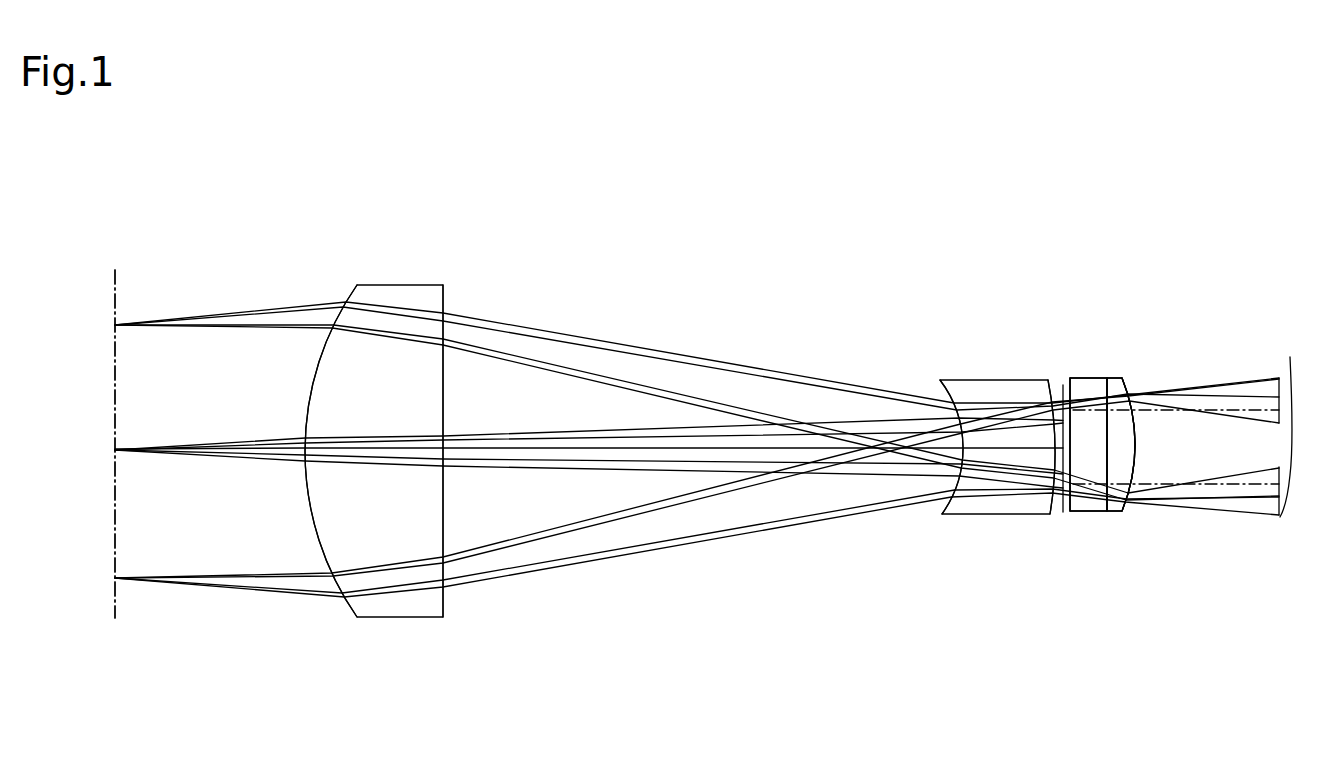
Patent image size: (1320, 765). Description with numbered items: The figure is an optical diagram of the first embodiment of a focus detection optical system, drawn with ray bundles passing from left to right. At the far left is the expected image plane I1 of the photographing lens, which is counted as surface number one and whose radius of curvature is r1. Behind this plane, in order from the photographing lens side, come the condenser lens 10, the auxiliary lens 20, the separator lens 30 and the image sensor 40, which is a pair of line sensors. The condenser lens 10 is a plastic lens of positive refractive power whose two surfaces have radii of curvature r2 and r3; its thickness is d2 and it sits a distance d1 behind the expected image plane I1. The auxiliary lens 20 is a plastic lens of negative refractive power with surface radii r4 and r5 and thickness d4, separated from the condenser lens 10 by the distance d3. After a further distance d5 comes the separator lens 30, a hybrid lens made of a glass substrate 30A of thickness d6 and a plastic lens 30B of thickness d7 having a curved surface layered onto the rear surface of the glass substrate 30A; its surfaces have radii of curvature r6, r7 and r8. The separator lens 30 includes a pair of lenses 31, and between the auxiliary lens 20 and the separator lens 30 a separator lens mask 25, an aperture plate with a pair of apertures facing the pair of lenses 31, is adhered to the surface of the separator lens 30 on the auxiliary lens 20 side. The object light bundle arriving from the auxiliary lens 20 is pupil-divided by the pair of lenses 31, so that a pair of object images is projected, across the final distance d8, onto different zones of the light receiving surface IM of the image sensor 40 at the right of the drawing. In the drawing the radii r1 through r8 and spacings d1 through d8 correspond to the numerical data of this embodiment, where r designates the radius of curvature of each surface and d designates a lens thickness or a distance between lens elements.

The expected image plane I1 is at (115, 270).
The radius of curvature of surface number one r1 is at (116, 272).
The radius of curvature of surface number two r2 is at (356, 287).
The radius of curvature of surface number three r3 is at (443, 297).
The radius of curvature of surface number four r4 is at (940, 381).
The radius of curvature of surface number five r5 is at (1047, 380).
The radius of curvature of surface number six r6 is at (1069, 384).
The radius of curvature of surface number seven r7 is at (1107, 385).
The radius of curvature of surface number eight r8 is at (1123, 385).
The distance from surface one to surface two d1 is at (255, 450).
The lens thickness of the condenser lens d2 is at (397, 450).
The distance from surface three to surface four d3 is at (687, 448).
The lens thickness of the auxiliary lens d4 is at (1000, 447).
The distance from surface five to surface six d5 is at (1063, 510).
The thickness of the glass substrate d6 is at (1088, 512).
The thickness of the plastic lens d7 is at (1117, 514).
The distance from surface eight to the light receiving surface d8 is at (1234, 480).
The condenser lens 10 is at (400, 285).
The auxiliary lens 20 is at (990, 380).
The separator lens mask 25 is at (1066, 520).
The separator lens 30 is at (1045, 265).
The glass substrate 30A is at (1083, 387).
The plastic lens 30B is at (1118, 387).
The pair of lenses 31 is at (1135, 422).
The light receiving surface IM is at (1279, 395).
The image sensor 40 is at (1292, 425).